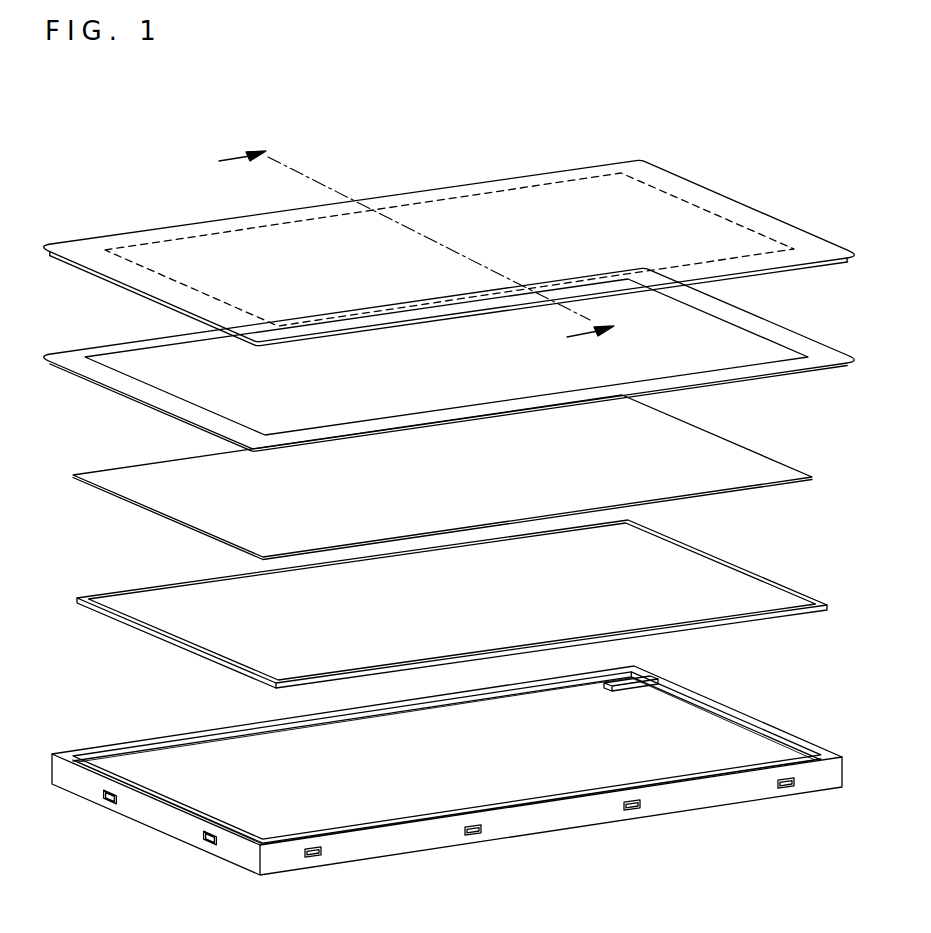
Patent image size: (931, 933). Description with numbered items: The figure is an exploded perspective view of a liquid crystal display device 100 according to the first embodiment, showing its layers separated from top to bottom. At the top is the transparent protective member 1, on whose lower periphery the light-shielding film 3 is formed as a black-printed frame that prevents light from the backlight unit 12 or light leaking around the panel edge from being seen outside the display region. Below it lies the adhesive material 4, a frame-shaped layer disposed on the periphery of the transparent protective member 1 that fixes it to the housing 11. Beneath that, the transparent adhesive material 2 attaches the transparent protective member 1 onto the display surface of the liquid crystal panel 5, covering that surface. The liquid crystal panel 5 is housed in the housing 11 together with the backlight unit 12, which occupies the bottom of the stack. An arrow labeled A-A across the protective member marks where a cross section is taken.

The liquid crystal display device 100 is at (131, 143).
The transparent protective member 1 is at (717, 200).
The light-shielding film 3 is at (760, 255).
The adhesive material 4 is at (68, 357).
The transparent adhesive material 2 is at (760, 468).
The liquid crystal panel 5 is at (775, 593).
The housing 11 is at (67, 757).
The backlight unit 12 is at (737, 752).